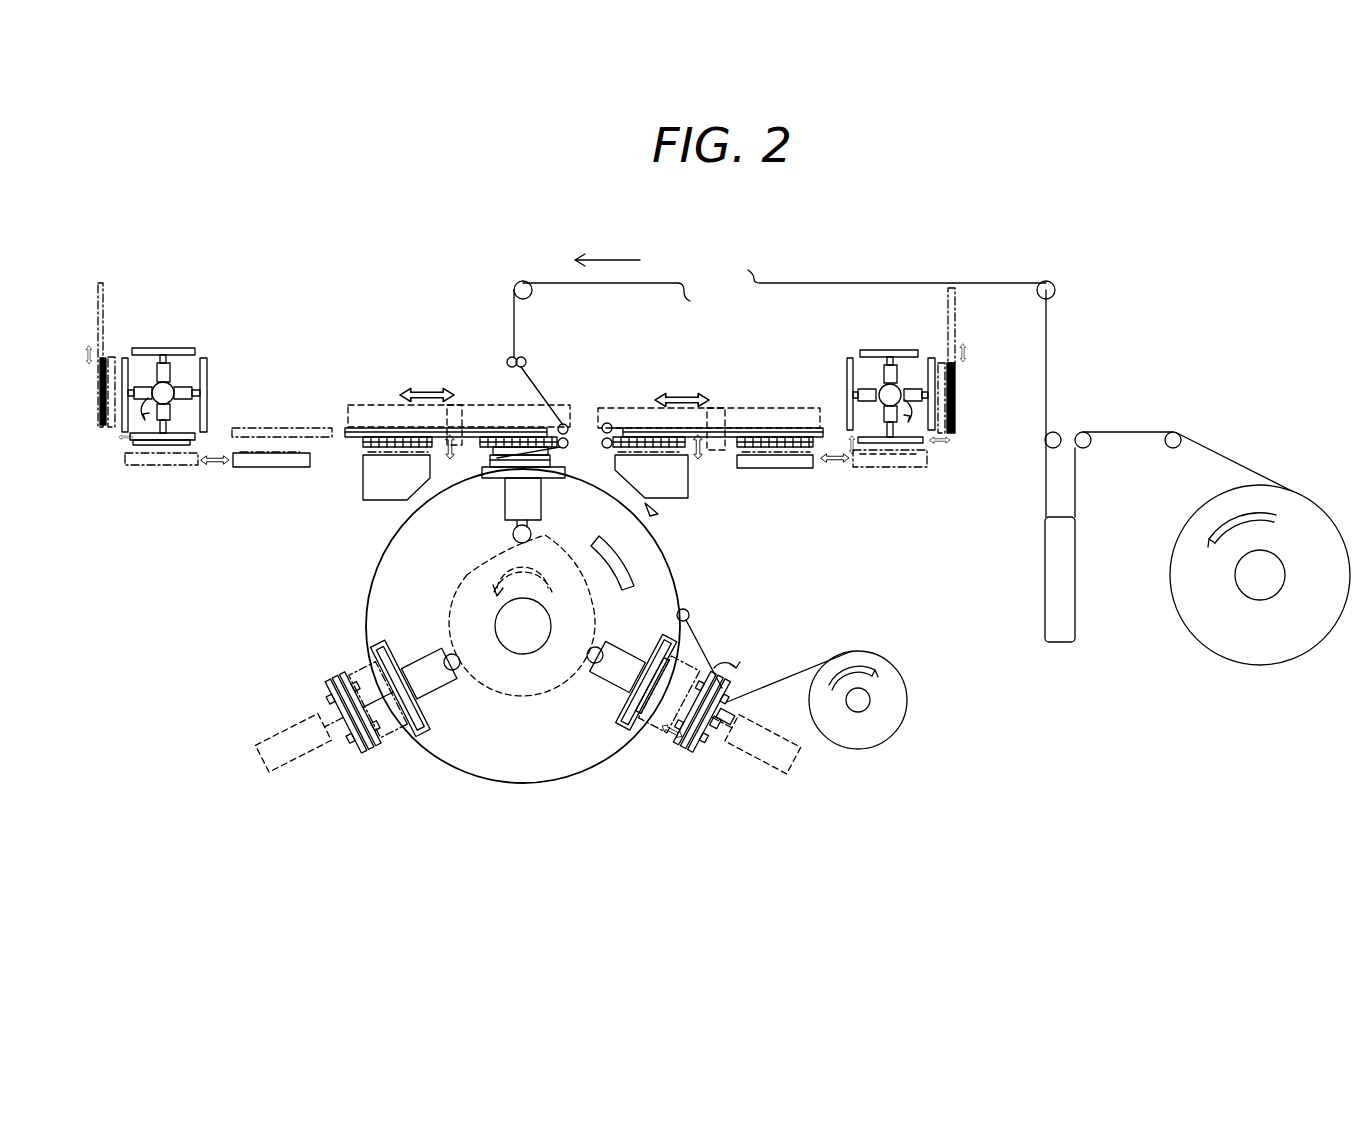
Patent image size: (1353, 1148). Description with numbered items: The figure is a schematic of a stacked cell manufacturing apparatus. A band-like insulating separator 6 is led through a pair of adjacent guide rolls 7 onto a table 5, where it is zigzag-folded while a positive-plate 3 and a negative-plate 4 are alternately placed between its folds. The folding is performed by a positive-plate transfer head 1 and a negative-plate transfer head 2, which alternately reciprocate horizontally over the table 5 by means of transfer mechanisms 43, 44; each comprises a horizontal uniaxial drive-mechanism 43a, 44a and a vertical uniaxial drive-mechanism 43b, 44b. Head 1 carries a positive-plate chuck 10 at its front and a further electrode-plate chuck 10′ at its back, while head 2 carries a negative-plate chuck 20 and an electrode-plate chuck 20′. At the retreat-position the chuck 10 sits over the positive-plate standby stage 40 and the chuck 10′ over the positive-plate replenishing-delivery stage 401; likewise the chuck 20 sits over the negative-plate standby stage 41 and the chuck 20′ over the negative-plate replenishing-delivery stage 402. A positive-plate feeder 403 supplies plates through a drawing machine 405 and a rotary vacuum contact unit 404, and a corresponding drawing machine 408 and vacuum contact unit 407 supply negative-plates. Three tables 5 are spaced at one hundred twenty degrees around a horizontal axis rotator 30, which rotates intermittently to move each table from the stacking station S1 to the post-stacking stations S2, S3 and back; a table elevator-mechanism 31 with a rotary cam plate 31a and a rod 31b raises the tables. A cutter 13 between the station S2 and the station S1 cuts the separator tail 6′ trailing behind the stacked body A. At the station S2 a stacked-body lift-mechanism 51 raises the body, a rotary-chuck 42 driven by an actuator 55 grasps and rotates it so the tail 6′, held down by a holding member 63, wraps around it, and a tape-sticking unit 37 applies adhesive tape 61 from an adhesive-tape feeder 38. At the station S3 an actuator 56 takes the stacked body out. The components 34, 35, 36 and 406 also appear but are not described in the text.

The positive-plate transfer head 1 is at (609, 424).
The negative-plate transfer head 2 is at (556, 430).
The positive-plate 3 is at (660, 440).
The negative-plate 4 is at (104, 298).
The table 5 is at (518, 528).
The separator 6 is at (547, 388).
The separator tail 6′ is at (700, 642).
The guide rolls 7 is at (526, 360).
The positive-plate chuck 10 is at (645, 437).
The electrode-plate chuck 10′ is at (812, 440).
The cutter 13 is at (656, 514).
The negative-plate chuck 20 is at (510, 437).
The electrode-plate chuck 20′ is at (397, 437).
The horizontal axis rotator 30 is at (540, 787).
The table elevator-mechanism 31 is at (280, 550).
The rotary cam plate 31a is at (470, 585).
The rod 31b is at (510, 530).
The guide roller 34 is at (523, 283).
The tension unit 35 is at (1077, 496).
The supply roll 36 is at (1300, 495).
The tape-sticking unit 37 is at (745, 718).
The adhesive-tape feeder 38 is at (893, 725).
The positive-plate standby stage 40 is at (685, 480).
The negative-plate standby stage 41 is at (370, 482).
The rotary-chuck mechanism 42 is at (724, 697).
The electrode-plate transfer-head drive-mechanism 43 is at (786, 352).
The horizontal uniaxial drive-mechanism 43a is at (757, 420).
The vertical uniaxial drive-mechanism 43b is at (715, 420).
The transfer mechanism 44 is at (376, 260).
The horizontal uniaxial drive-mechanism 44a is at (430, 415).
The vertical uniaxial drive-mechanism 44b is at (453, 415).
The stacked-body lift-mechanism 51 is at (650, 707).
The actuator 55 is at (795, 765).
The actuator 56 is at (293, 752).
The adhesive tape 61 is at (805, 668).
The holding member 63 is at (690, 612).
The positive-plate replenishing-delivery stage 401 is at (775, 470).
The negative-plate replenishing-delivery stage 402 is at (260, 467).
The positive-plate feeder 403 is at (905, 385).
The vacuum contact unit 404 is at (850, 380).
The drawing machine 405 is at (957, 397).
The handling unit 406 is at (177, 372).
The vacuum contact unit 407 is at (207, 380).
The drawing machine 408 is at (100, 392).
The stacked body A is at (362, 747).
The station for the stacking step S1 is at (570, 468).
The station for the post-stacking step S2 is at (680, 752).
The station for the post-stacking step S3 is at (385, 732).